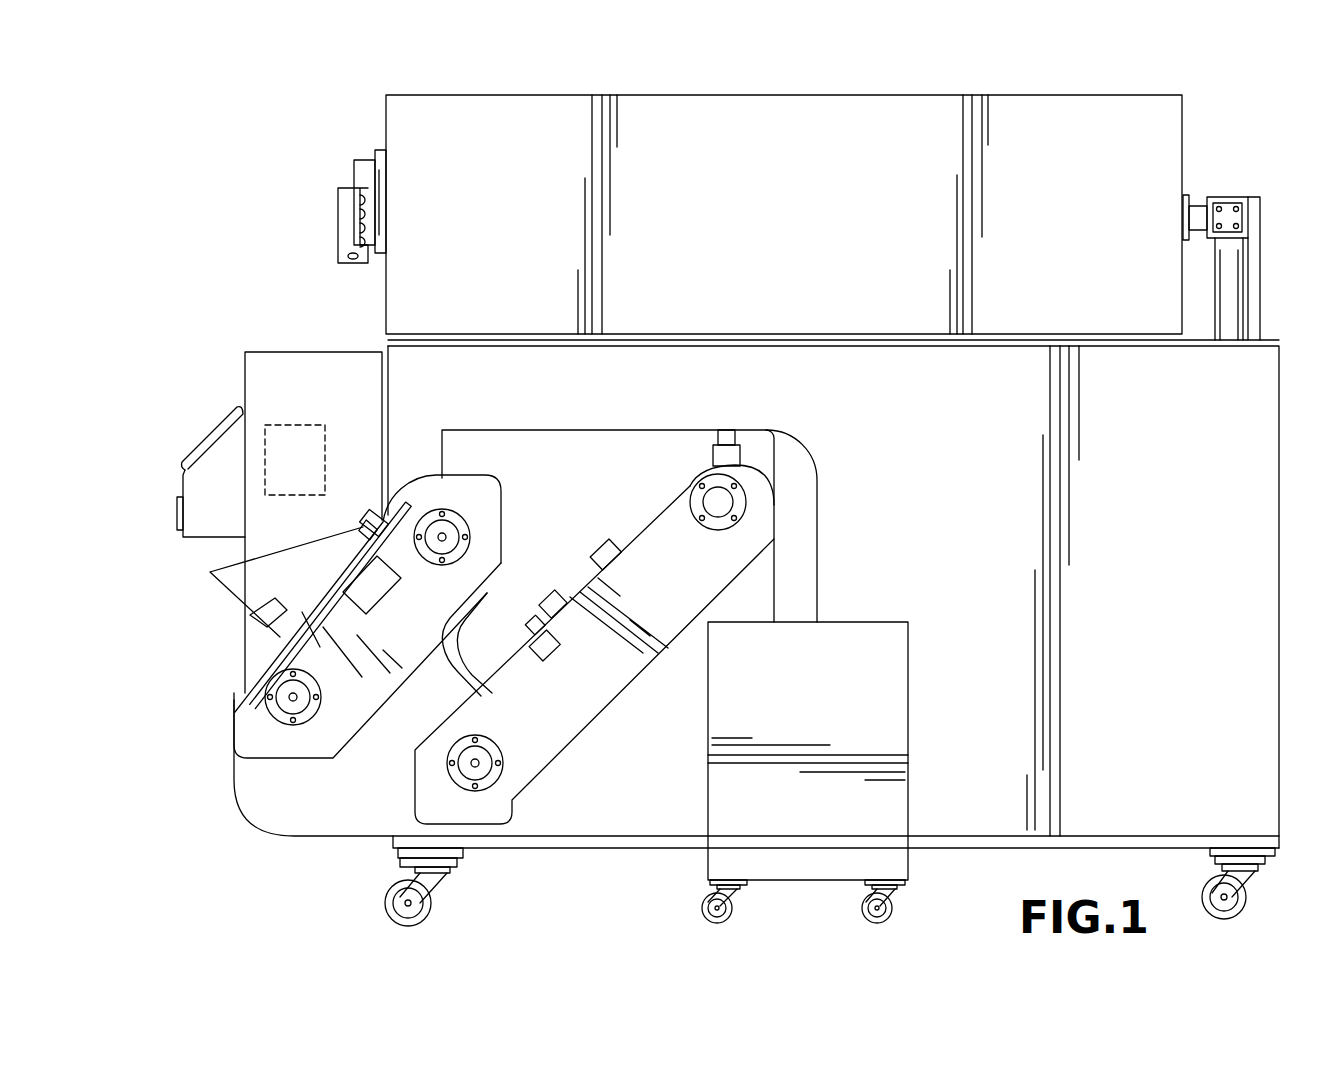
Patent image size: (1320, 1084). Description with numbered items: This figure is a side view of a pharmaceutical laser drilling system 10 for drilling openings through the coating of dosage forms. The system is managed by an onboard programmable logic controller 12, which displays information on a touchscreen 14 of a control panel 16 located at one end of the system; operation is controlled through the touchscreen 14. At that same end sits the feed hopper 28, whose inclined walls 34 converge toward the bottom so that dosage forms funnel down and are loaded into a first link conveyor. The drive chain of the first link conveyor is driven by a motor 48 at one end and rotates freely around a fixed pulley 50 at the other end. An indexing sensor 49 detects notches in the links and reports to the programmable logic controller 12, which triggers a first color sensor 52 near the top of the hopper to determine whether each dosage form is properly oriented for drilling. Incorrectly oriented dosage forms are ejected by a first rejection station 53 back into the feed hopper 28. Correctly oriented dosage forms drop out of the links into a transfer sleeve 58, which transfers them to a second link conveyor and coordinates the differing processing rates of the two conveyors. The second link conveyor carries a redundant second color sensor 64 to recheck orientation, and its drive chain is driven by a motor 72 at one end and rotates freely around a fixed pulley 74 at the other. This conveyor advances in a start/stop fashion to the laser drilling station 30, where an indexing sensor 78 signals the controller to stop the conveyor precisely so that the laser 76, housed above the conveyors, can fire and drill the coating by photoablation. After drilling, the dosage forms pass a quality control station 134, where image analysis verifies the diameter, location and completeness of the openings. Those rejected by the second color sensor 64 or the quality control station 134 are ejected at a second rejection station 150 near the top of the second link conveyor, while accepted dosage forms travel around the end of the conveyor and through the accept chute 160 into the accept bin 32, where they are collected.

The laser drilling system 10 is at (174, 154).
The programmable logic controller 12 is at (328, 442).
The touchscreen 14 is at (195, 450).
The control panel 16 is at (212, 397).
The feed hopper 28 is at (228, 590).
The laser drilling station 30 is at (561, 597).
The accept bin 32 is at (791, 716).
The inclined walls 34 is at (263, 590).
The motor 48 is at (474, 534).
The indexing sensor 49 is at (360, 528).
The fixed pulley 50 is at (293, 726).
The first color sensor 52 is at (378, 592).
The first rejection station 53 is at (374, 518).
The transfer sleeve 58 is at (478, 672).
The second color sensor 64 is at (541, 665).
The motor 72 is at (690, 498).
The fixed pulley 74 is at (450, 773).
The laser 76 is at (803, 228).
The indexing sensor 78 is at (549, 630).
The quality control station 134 is at (620, 563).
The second rejection station 150 is at (727, 445).
The accept chute 160 is at (808, 572).